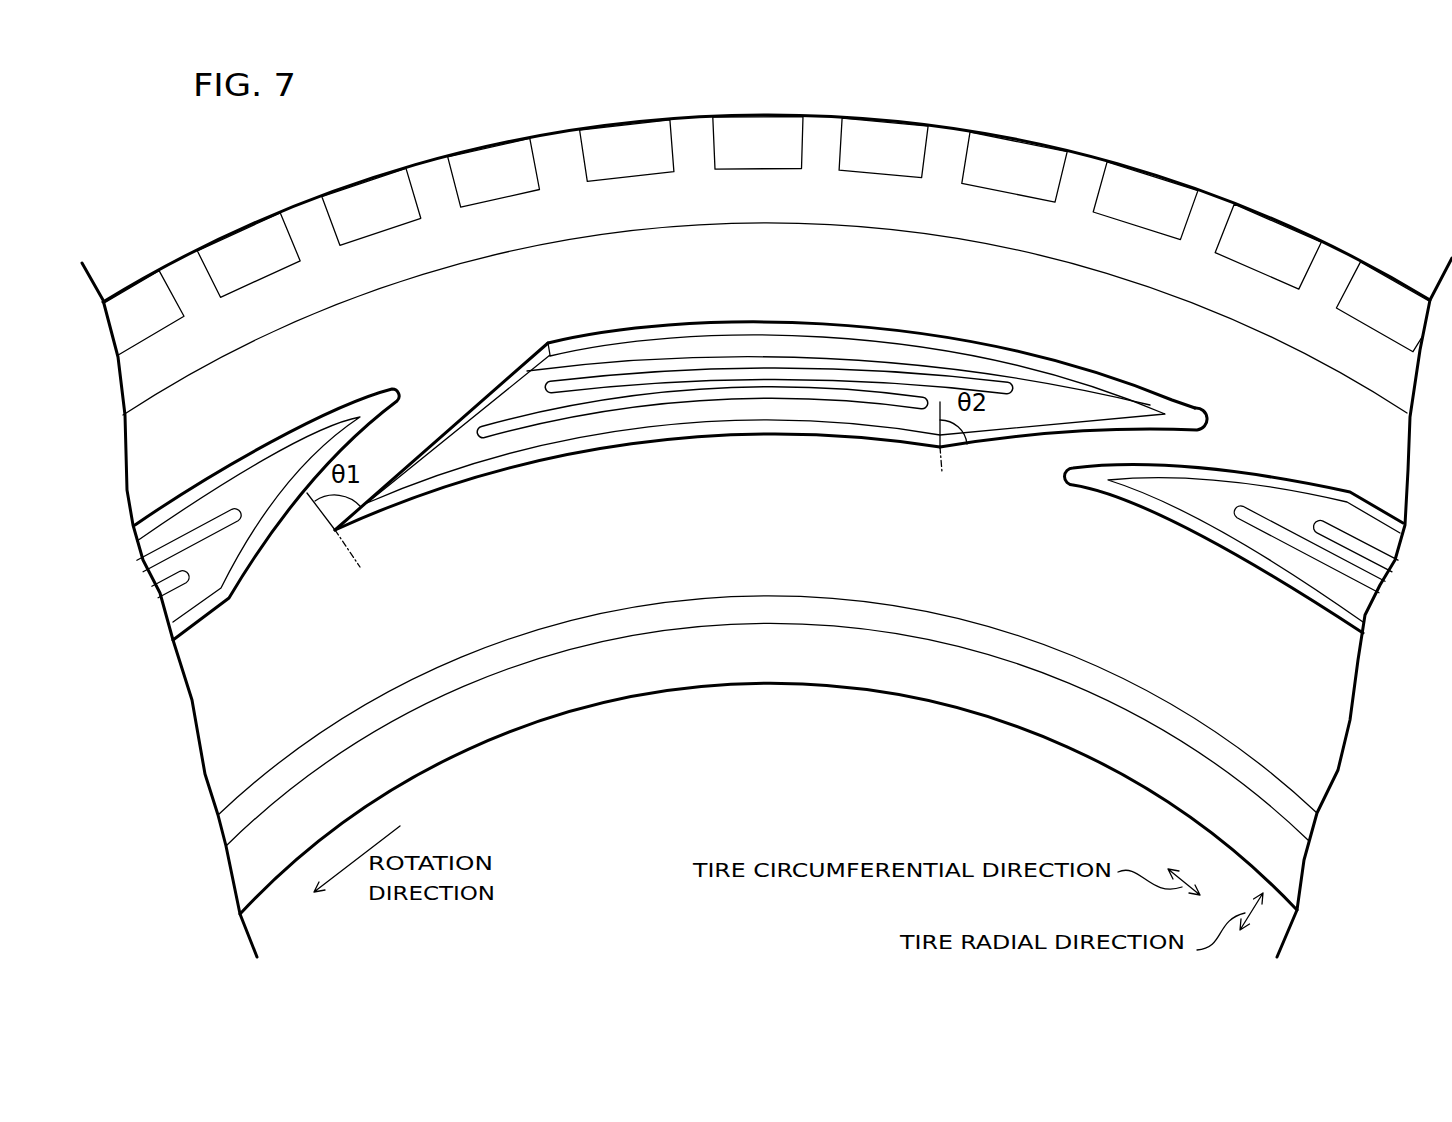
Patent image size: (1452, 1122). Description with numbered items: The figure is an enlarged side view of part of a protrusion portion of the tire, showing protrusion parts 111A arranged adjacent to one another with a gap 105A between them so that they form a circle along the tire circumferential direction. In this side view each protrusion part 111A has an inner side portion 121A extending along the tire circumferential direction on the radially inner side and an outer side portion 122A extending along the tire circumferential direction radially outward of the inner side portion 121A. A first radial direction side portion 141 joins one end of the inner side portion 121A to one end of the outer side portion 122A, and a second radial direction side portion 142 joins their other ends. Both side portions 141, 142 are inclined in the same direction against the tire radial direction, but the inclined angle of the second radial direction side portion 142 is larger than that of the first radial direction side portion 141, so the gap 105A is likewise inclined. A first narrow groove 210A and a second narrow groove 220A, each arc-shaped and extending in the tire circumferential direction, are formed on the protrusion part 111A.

The gap 105A is at (869, 433).
The protrusion part 111A is at (248, 493).
The inner side portion 121A is at (770, 436).
The outer side portion 122A is at (883, 321).
The first radial direction side portion 141 is at (430, 420).
The second radial direction side portion 142 is at (1060, 428).
The first narrow groove 210A is at (717, 390).
The second narrow groove 220A is at (835, 362).